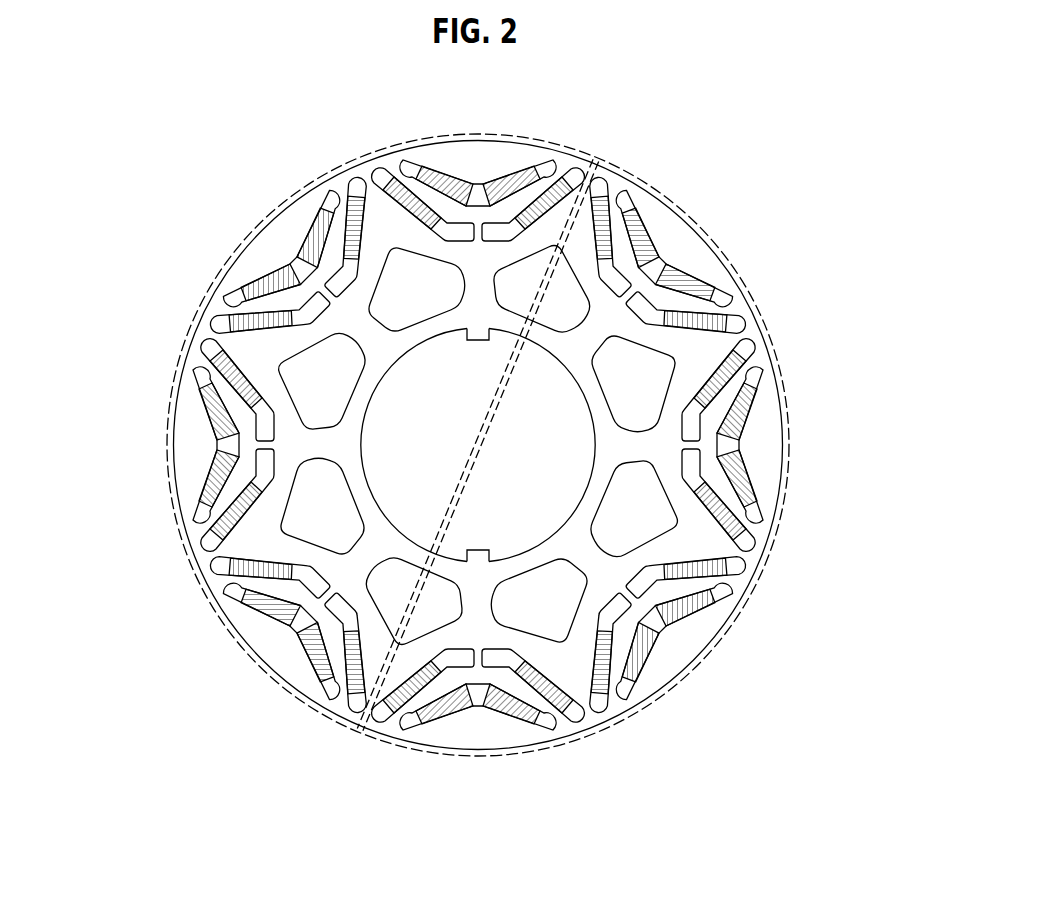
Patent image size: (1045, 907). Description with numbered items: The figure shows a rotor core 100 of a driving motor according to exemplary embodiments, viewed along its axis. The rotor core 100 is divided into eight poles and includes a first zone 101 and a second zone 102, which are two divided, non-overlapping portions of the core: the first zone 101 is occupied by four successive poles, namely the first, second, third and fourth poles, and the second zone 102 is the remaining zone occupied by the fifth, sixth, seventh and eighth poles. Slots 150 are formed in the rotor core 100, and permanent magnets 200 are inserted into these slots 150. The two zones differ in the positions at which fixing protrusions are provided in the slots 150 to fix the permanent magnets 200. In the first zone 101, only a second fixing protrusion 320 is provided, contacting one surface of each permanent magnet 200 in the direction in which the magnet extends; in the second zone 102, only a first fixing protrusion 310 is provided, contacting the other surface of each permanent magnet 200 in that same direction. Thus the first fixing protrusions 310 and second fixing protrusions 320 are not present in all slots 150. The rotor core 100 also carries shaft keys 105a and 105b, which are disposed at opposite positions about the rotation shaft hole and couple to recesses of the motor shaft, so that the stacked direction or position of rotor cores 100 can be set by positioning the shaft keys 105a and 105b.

The rotor core 100 is at (487, 447).
The first zone 101 is at (757, 301).
The second zone 102 is at (308, 186).
The shaft key 105a is at (458, 376).
The shaft key 105b is at (500, 521).
The slot 150 is at (663, 240).
The permanent magnet 200 is at (509, 152).
The first fixing protrusion 310 is at (437, 152).
The second fixing protrusion 320 is at (692, 262).